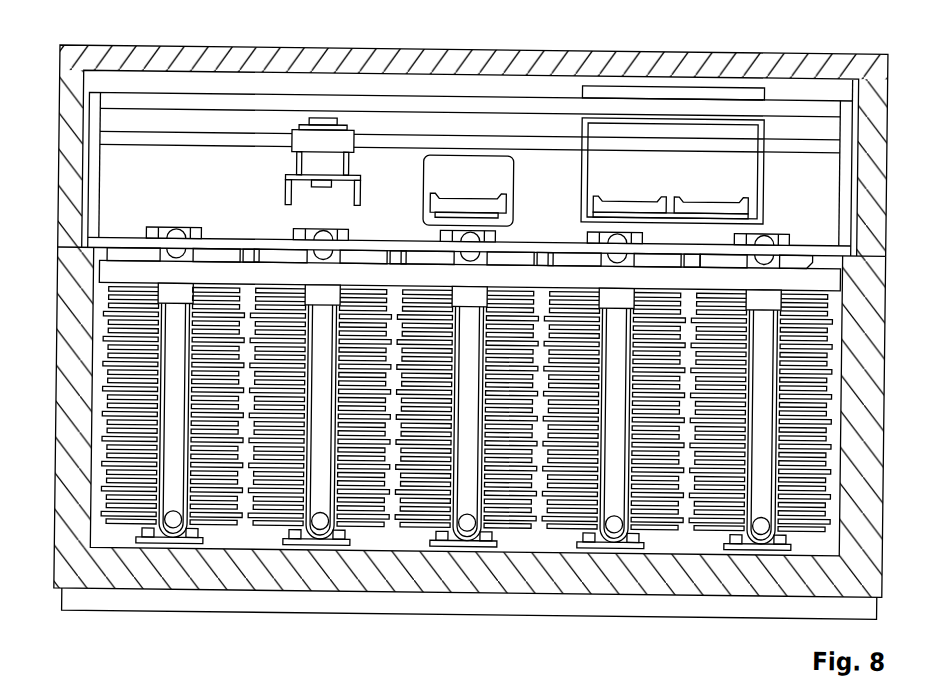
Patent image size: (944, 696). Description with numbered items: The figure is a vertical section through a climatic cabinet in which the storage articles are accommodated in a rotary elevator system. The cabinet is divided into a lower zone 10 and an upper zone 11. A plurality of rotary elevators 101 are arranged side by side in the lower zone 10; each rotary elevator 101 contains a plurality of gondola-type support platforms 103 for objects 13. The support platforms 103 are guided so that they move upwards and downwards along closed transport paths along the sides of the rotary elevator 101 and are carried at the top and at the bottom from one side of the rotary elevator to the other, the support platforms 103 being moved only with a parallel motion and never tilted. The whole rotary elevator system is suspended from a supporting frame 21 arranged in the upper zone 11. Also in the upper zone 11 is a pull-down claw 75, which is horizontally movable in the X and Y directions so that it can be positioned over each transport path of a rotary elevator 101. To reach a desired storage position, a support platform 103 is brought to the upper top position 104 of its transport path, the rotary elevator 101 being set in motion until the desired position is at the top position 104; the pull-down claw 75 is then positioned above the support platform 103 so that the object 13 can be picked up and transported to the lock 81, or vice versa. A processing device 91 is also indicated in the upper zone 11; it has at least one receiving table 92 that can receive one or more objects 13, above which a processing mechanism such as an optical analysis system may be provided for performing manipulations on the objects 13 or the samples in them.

The lower zone 10 is at (52, 403).
The upper zone 11 is at (49, 153).
The object 13 is at (124, 364).
The supporting frame 21 is at (178, 96).
The pull-down claw 75 is at (353, 149).
The lock 81 is at (474, 148).
The processing device 91 is at (749, 196).
The receiving table 92 is at (729, 118).
The rotary elevator 101 is at (130, 532).
The support platform 103 is at (113, 329).
The top position 104 is at (302, 224).